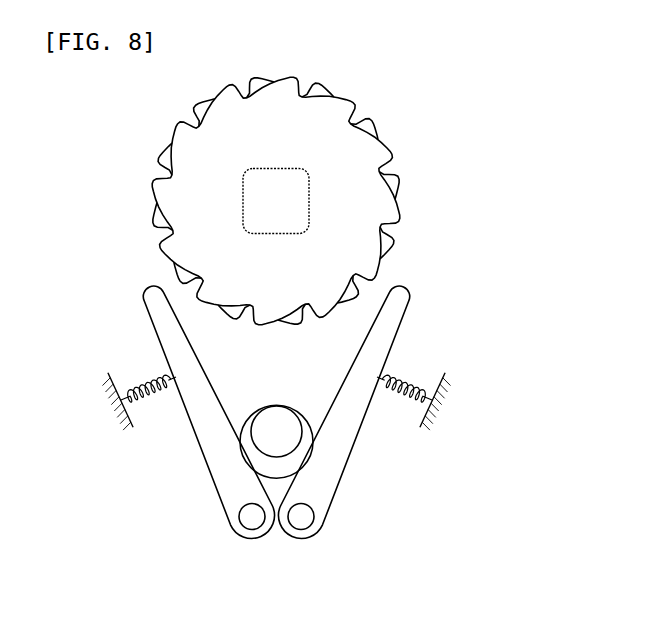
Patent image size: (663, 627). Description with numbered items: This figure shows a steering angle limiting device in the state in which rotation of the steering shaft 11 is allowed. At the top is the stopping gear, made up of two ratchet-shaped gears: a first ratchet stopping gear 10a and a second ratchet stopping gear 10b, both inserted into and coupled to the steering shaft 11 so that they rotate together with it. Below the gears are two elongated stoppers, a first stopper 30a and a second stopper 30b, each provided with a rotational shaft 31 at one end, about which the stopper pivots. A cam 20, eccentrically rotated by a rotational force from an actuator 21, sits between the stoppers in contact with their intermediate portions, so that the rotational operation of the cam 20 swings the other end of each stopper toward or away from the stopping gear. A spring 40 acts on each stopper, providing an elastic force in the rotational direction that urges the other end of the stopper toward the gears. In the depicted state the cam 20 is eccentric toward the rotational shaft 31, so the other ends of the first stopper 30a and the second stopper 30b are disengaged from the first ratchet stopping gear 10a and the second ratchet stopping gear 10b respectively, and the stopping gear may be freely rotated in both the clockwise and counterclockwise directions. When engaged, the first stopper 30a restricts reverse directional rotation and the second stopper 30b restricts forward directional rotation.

The first ratchet stopping gear 10a is at (156, 220).
The second ratchet stopping gear 10b is at (367, 158).
The steering shaft 11 is at (293, 203).
The cam 20 is at (300, 460).
The actuator 21 is at (267, 442).
The first stopper 30a is at (200, 438).
The second stopper 30b is at (353, 438).
The rotational shaft 31 is at (301, 527).
The spring 40 is at (147, 383).